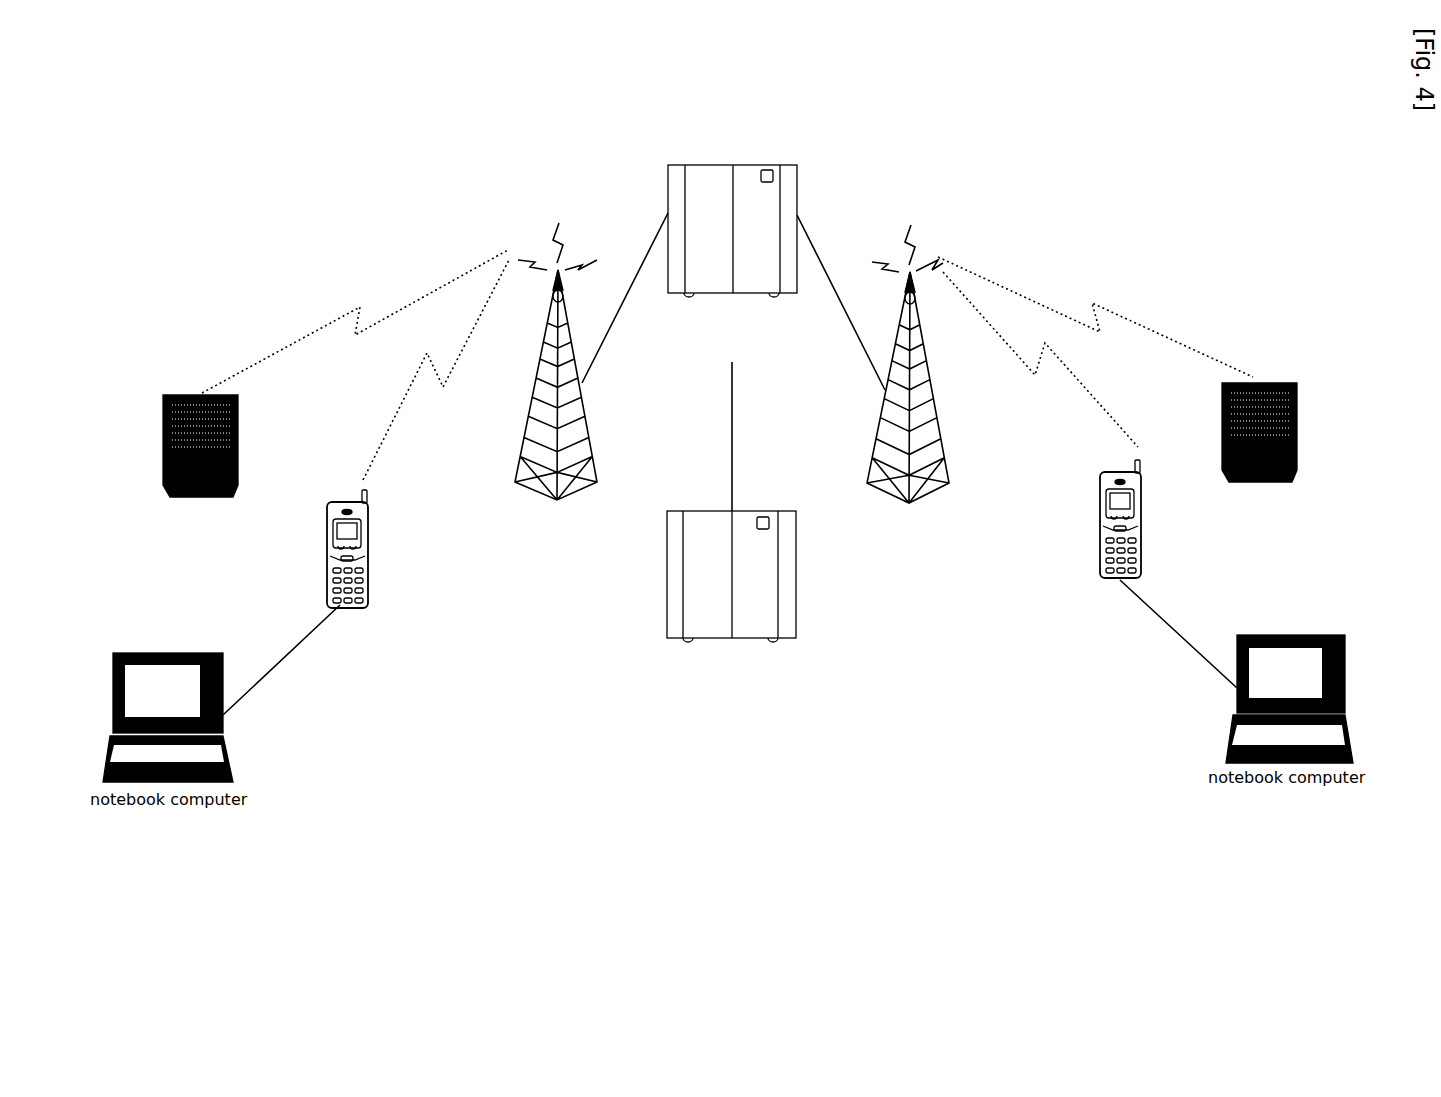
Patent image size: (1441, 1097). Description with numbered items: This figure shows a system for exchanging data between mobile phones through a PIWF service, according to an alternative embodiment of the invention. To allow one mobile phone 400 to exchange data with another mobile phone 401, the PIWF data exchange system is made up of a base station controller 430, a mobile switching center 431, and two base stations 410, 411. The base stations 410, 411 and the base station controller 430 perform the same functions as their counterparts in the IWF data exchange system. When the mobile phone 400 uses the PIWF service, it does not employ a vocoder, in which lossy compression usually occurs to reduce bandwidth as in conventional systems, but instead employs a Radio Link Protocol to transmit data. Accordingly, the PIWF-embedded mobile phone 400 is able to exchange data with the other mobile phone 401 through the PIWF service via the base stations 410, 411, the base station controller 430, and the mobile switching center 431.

The mobile phone 400 is at (369, 572).
The mobile phone 401 is at (1143, 532).
The base station 410 is at (590, 450).
The base station 411 is at (945, 450).
The base station controller 430 is at (752, 165).
The mobile switching center 431 is at (750, 511).